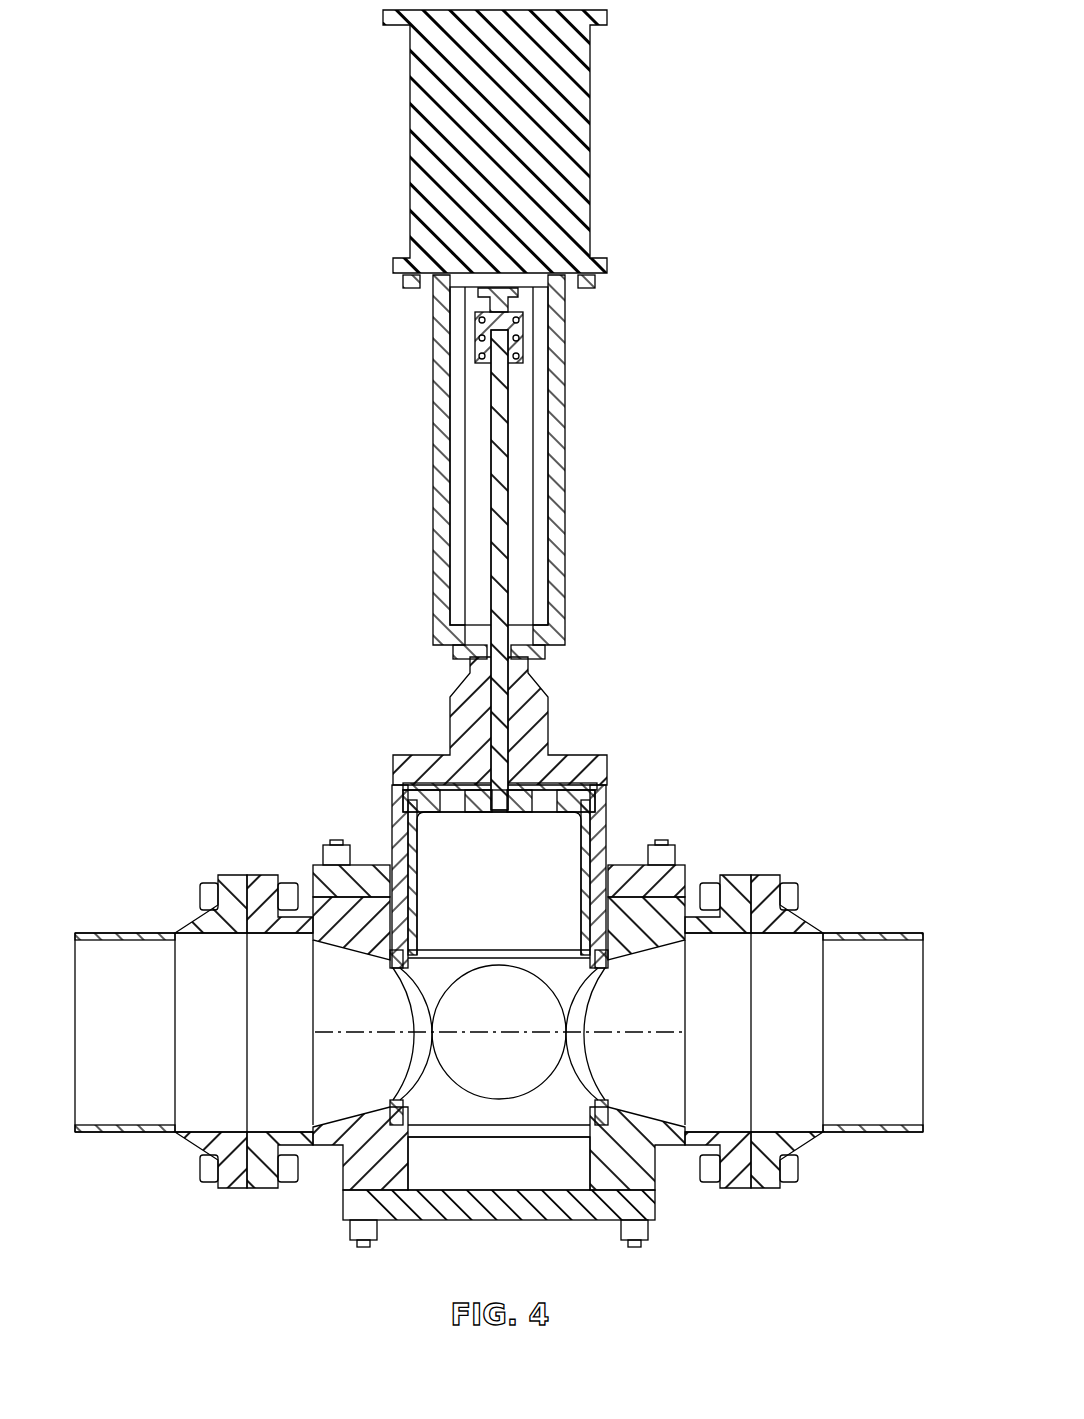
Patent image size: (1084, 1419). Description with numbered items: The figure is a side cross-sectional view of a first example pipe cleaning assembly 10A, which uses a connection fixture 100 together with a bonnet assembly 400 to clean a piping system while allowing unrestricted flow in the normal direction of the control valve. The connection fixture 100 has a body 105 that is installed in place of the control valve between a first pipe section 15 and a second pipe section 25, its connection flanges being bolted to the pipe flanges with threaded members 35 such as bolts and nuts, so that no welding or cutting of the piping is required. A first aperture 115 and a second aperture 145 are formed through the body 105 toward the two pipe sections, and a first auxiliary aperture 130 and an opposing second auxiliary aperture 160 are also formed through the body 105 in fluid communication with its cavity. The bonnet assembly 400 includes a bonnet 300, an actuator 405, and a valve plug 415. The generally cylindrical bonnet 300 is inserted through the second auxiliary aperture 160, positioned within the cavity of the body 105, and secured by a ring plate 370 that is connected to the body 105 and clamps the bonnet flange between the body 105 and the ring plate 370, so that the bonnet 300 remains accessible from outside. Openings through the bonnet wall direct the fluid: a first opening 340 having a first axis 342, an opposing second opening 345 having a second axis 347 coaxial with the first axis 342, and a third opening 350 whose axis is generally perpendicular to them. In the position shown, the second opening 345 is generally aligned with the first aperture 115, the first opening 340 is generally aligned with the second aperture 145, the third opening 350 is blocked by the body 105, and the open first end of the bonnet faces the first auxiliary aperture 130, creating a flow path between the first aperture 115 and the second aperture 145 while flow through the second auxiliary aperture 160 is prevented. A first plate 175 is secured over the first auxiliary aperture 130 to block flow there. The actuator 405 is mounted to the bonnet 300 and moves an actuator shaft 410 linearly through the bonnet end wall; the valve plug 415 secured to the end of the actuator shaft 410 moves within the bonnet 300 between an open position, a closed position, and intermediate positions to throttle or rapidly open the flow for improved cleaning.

The pipe cleaning assembly 10A is at (220, 208).
The first pipe section 15 is at (120, 932).
The second pipe section 25 is at (880, 932).
The threaded members 35 is at (337, 845).
The connection fixture 100 is at (323, 1165).
The body 105 is at (662, 1140).
The first aperture 115 is at (293, 942).
The first auxiliary aperture 130 is at (592, 1157).
The second aperture 145 is at (733, 942).
The second auxiliary aperture 160 is at (608, 905).
The first plate 175 is at (485, 1222).
The bonnet 300 is at (392, 812).
The first opening 340 is at (596, 1105).
The first axis 342 is at (636, 1030).
The second opening 345 is at (402, 1105).
The second axis 347 is at (362, 1030).
The third opening 350 is at (476, 1046).
The ring plate 370 is at (630, 882).
The bonnet assembly 400 is at (412, 716).
The actuator 405 is at (432, 422).
The actuator shaft 410 is at (500, 470).
The valve plug 415 is at (582, 812).